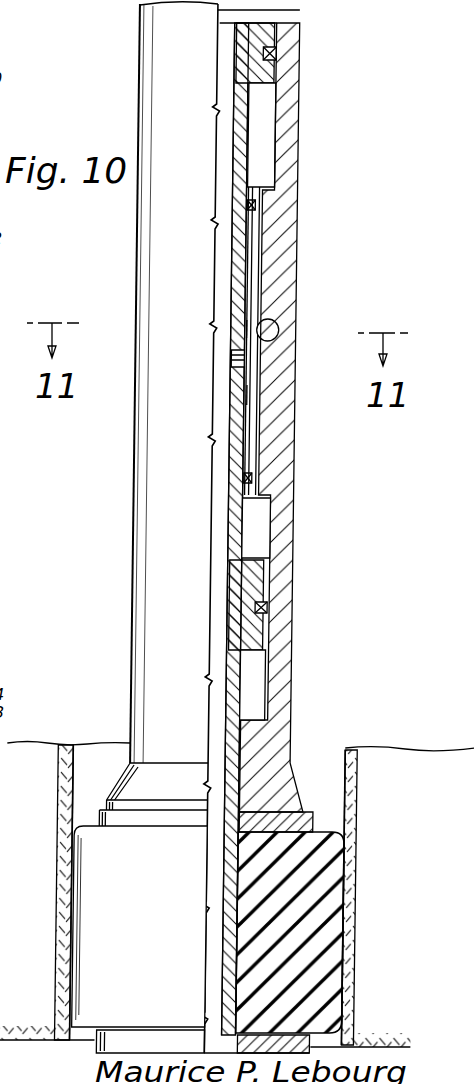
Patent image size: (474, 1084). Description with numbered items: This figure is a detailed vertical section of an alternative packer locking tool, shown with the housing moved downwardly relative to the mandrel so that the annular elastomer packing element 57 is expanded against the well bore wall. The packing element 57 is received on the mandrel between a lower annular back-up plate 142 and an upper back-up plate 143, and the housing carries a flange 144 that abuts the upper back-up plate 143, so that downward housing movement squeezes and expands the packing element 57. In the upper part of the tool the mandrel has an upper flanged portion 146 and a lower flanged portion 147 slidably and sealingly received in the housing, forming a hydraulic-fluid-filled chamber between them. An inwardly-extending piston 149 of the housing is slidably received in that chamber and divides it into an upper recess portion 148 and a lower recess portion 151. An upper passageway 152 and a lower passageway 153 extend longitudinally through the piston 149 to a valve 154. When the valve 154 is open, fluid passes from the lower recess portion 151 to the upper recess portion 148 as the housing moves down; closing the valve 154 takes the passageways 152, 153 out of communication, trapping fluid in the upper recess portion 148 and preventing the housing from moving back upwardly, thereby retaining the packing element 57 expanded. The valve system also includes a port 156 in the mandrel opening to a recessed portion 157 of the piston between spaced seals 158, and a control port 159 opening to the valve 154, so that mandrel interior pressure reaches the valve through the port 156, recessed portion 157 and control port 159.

The annular elastomer packing element 57 is at (330, 905).
The annular back-up plate 142 is at (305, 1050).
The upper back-up plate 143 is at (313, 825).
The housing flange 144 is at (296, 800).
The upper flanged portion 146 is at (262, 34).
The lower flanged portion 147 is at (253, 585).
The upper recess portion 148 is at (265, 107).
The piston 149 is at (265, 418).
The lower recess portion 151 is at (252, 517).
The upper passageway 152 is at (268, 258).
The lower passageway 153 is at (262, 382).
The valve 154 is at (281, 331).
The port 156 is at (233, 356).
The recessed portion 157 is at (245, 396).
The seals 158 is at (247, 206).
The control port 159 is at (255, 328).